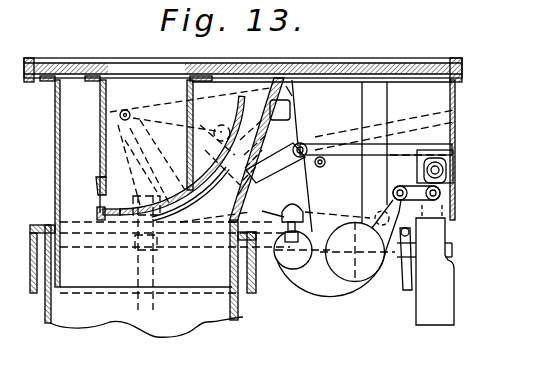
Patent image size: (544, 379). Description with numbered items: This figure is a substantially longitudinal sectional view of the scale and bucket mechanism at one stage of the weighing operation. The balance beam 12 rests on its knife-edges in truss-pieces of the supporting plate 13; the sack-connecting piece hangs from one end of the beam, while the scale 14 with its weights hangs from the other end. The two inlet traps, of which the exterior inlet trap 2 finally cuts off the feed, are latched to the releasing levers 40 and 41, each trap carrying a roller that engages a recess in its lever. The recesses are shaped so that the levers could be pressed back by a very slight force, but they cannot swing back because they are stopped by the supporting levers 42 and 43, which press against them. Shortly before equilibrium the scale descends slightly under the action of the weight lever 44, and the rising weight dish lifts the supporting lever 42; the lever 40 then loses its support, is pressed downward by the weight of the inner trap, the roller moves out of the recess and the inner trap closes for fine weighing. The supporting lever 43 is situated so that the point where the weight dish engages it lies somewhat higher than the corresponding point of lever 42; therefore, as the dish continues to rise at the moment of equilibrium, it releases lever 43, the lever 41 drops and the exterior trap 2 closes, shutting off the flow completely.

The supporting plate 13 is at (352, 66).
The inlet trap 2 is at (171, 158).
The balance beam 12 is at (289, 206).
The releasing lever 40 is at (296, 110).
The releasing lever 41 is at (294, 93).
The supporting lever 42 is at (351, 156).
The supporting lever 43 is at (392, 113).
The weight lever 44 is at (361, 278).
The scale 14 is at (416, 308).